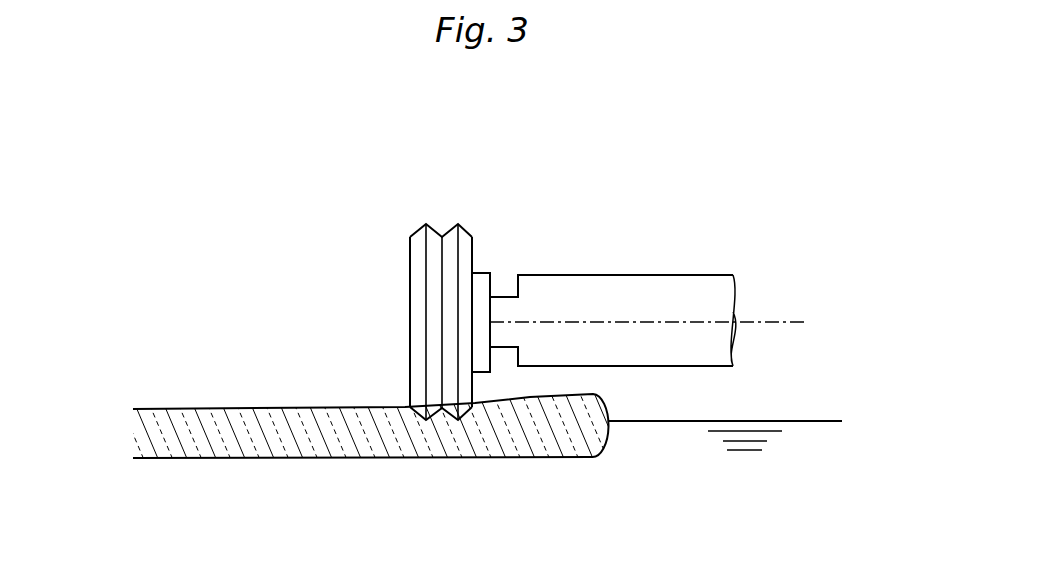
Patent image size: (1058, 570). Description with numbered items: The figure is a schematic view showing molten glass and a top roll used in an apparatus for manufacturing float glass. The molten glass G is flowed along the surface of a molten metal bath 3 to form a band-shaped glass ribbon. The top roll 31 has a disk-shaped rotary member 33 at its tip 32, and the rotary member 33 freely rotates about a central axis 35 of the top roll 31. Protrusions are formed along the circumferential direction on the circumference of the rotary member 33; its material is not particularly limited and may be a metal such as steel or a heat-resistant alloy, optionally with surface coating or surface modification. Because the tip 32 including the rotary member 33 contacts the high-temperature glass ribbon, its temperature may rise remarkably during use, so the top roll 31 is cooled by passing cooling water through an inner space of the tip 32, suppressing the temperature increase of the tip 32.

The molten metal bath 3 is at (808, 420).
The top roll 31 is at (586, 265).
The tip 32 is at (440, 265).
The rotary member 33 is at (426, 265).
The central axis 35 is at (773, 318).
The molten glass G is at (264, 408).